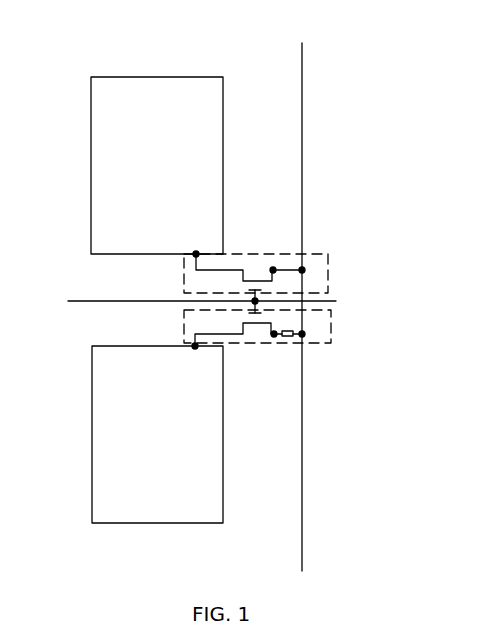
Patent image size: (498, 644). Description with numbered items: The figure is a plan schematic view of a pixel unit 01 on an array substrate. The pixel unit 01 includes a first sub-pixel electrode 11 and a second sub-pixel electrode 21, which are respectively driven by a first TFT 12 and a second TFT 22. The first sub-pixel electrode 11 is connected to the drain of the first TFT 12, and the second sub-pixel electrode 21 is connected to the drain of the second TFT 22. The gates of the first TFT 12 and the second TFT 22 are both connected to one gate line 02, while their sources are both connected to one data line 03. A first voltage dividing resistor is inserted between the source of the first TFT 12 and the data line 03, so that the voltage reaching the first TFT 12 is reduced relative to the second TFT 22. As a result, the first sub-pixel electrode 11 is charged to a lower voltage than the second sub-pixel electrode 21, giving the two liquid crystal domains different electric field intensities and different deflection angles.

The pixel unit 01 is at (235, 30).
The second sub-pixel electrode 21 is at (122, 77).
The first sub-pixel electrode 11 is at (127, 523).
The second TFT 22 is at (310, 251).
The first TFT 12 is at (308, 342).
The data line 03 is at (302, 113).
The gate line 02 is at (122, 301).